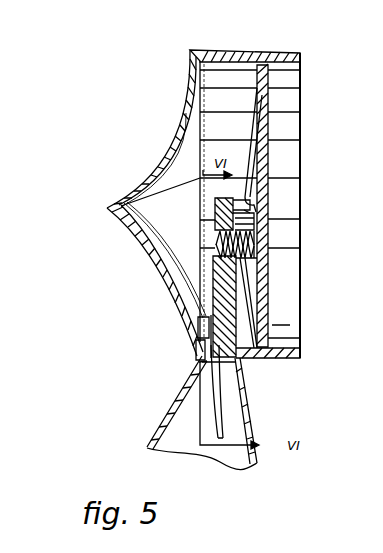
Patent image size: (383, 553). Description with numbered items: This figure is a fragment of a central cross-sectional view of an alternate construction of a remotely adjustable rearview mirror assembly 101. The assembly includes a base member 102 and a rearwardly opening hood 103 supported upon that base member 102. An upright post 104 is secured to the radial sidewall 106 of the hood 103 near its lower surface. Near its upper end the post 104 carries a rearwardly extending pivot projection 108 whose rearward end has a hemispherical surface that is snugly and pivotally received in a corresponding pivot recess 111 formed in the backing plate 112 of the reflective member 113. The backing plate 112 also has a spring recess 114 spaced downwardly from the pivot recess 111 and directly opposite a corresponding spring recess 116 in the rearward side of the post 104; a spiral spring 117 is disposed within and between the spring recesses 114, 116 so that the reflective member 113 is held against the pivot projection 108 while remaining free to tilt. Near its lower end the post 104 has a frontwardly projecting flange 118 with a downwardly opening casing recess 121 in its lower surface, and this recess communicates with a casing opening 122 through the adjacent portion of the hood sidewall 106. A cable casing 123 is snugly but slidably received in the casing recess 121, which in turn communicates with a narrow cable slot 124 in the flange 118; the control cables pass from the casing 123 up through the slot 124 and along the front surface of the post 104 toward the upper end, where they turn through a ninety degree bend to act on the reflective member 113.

The mirror assembly 101 is at (153, 272).
The base member 102 is at (175, 398).
The hood 103 is at (187, 87).
The post 104 is at (212, 273).
The radial sidewall 106 is at (244, 56).
The pivot projection 108 is at (270, 200).
The pivot recess 111 is at (270, 221).
The backing plate 112 is at (255, 118).
The reflective member 113 is at (270, 150).
The spring recess 114 is at (270, 248).
The spring recess 116 is at (212, 230).
The spiral spring 117 is at (216, 262).
The flange 118 is at (198, 337).
The casing recess 121 is at (240, 340).
The casing opening 122 is at (215, 361).
The cable casing 123 is at (221, 418).
The cable slot 124 is at (198, 320).